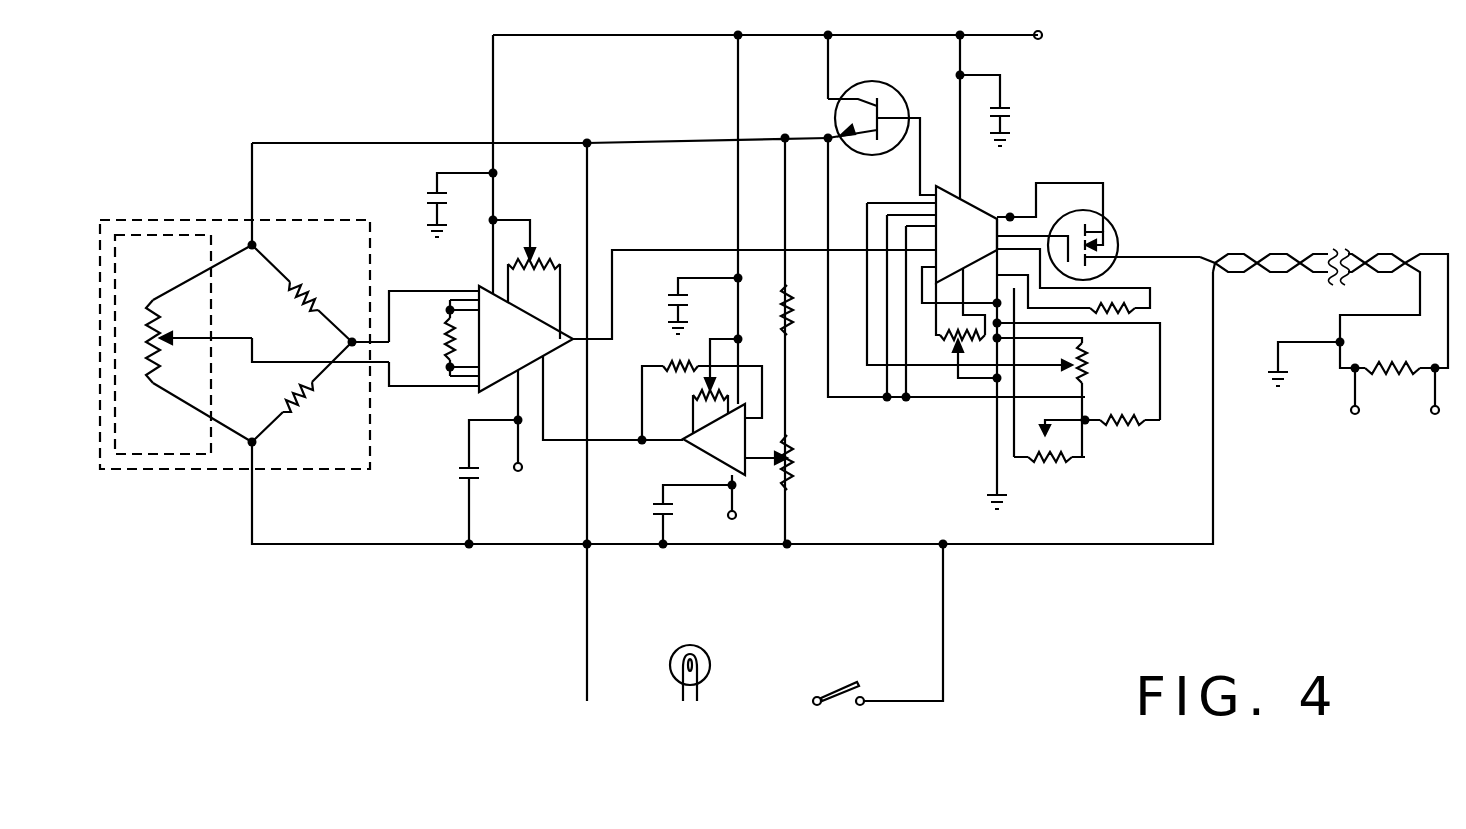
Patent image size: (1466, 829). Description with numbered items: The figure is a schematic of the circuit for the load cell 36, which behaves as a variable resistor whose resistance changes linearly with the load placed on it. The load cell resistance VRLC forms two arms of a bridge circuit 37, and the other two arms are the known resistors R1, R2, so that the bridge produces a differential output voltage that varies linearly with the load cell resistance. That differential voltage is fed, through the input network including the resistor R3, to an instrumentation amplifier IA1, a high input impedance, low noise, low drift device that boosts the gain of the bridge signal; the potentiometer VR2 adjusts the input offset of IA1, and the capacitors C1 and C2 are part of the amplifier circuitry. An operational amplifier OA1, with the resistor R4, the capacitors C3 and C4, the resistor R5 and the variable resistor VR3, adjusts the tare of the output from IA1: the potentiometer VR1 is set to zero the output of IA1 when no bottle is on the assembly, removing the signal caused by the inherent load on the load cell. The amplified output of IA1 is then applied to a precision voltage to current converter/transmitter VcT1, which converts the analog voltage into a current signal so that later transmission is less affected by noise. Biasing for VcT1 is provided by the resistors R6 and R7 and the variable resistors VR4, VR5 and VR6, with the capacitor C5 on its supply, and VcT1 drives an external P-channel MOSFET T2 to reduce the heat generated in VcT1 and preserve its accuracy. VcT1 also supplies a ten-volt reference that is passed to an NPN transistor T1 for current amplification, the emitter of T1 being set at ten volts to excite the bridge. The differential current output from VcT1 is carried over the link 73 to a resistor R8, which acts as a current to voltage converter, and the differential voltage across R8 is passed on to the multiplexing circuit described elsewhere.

The load cell 36 is at (178, 232).
The bridge circuit 37 is at (330, 215).
The twisted pair cable 73 is at (1283, 253).
The load cell resistance VRLC is at (175, 313).
The resistor R1 is at (310, 305).
The resistor R2 is at (303, 402).
The resistor R3 is at (444, 340).
The instrumentation amplifier IA1 is at (560, 363).
The potentiometer VR2 is at (550, 260).
The capacitor C1 is at (437, 194).
The capacitor C2 is at (468, 480).
The capacitor C3 is at (673, 293).
The capacitor C4 is at (662, 503).
The capacitor C5 is at (1010, 105).
The resistor R4 is at (673, 360).
The potentiometer VR1 is at (698, 392).
The operational amplifier OA1 is at (714, 439).
The resistor R5 is at (790, 325).
The variable resistor VR3 is at (796, 483).
The NPN transistor T1 is at (902, 70).
The voltage to current converter/transmitter VcT1 is at (966, 234).
The variable resistor VR4 is at (945, 342).
The P-channel MOSFET T2 is at (1117, 237).
The resistor R6 is at (1118, 306).
The variable resistor VR6 is at (1117, 363).
The variable resistor VR5 is at (1049, 475).
The resistor R7 is at (1128, 422).
The resistor R8 is at (1412, 337).